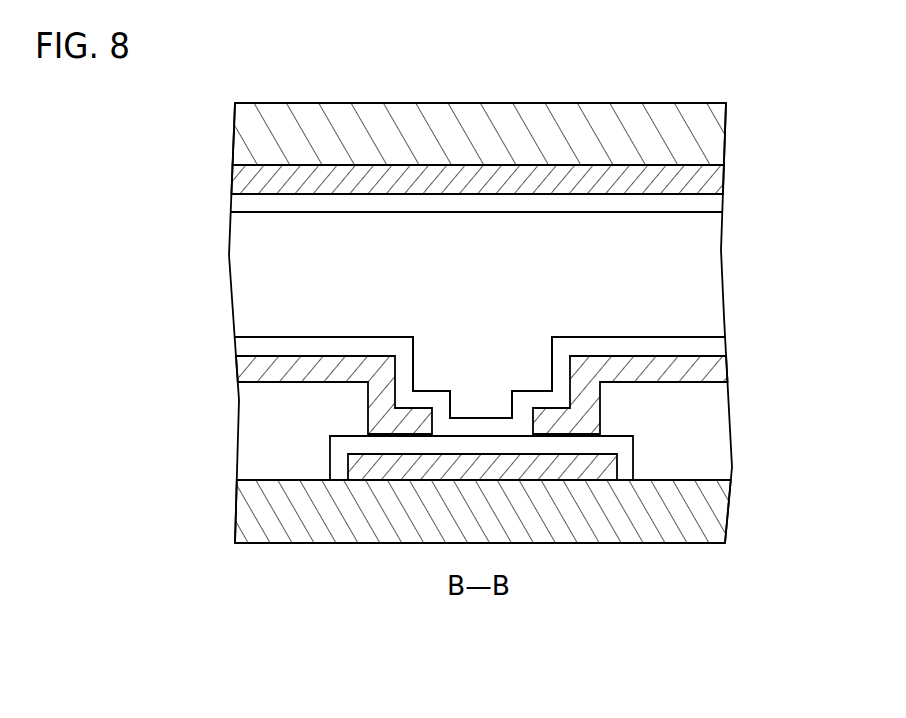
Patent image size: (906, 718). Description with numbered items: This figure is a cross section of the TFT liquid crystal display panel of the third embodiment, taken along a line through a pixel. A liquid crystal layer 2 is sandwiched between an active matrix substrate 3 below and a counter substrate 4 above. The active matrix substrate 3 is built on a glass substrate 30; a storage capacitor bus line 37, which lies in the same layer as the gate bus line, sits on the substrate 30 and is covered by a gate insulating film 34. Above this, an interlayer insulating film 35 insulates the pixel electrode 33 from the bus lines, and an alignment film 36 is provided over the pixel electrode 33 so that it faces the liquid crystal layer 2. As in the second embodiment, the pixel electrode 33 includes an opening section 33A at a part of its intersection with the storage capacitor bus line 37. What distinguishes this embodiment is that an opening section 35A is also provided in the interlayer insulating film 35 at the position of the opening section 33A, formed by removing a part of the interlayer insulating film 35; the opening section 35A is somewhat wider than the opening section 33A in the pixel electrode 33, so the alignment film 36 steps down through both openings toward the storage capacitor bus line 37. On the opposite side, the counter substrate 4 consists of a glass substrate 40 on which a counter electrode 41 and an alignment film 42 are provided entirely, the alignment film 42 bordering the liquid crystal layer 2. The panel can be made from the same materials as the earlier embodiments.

The liquid crystal layer 2 is at (712, 281).
The active matrix substrate 3 is at (533, 415).
The counter substrate 4 is at (526, 170).
The substrate 30 is at (506, 511).
The pixel electrode 33 is at (507, 361).
The opening section 33A is at (437, 427).
The gate insulating film 34 is at (615, 447).
The interlayer insulating film 35 is at (720, 400).
The opening section 35A is at (385, 397).
The alignment film 36 is at (718, 347).
The storage capacitor bus line 37 is at (602, 464).
The substrate 40 is at (712, 136).
The counter electrode 41 is at (712, 179).
The alignment film 42 is at (502, 211).